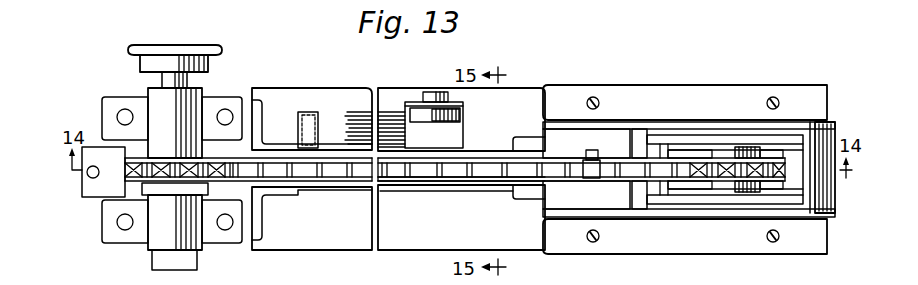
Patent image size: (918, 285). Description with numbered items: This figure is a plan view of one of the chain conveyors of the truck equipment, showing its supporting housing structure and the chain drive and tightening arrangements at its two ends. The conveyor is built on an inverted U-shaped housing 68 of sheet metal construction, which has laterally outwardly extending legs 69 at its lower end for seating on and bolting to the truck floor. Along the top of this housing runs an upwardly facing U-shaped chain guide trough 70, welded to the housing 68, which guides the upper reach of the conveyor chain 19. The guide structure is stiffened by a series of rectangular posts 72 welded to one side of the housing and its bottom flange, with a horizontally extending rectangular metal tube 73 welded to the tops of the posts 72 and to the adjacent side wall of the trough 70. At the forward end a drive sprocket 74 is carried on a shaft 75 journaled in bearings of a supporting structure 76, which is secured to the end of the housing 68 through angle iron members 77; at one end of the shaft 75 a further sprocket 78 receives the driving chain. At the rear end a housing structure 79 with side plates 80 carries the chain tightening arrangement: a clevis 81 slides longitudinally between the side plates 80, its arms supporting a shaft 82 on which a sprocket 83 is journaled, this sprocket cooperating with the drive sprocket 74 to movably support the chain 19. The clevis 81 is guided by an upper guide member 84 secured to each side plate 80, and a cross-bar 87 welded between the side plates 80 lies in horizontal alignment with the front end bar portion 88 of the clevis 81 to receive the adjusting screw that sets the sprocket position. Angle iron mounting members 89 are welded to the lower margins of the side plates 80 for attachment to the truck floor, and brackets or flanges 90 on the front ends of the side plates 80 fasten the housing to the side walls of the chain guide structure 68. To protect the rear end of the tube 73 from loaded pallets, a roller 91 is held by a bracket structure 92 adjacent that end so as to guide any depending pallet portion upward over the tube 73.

The conveyor chain 19 is at (338, 186).
The inverted U-shaped housing 68 is at (453, 190).
The legs 69 is at (295, 95).
The chain guide trough 70 is at (410, 183).
The rectangular posts 72 is at (318, 130).
The rectangular metal tube 73 is at (352, 112).
The sprocket 74 is at (170, 187).
The shaft 75 is at (165, 80).
The supporting structure 76 is at (100, 222).
The angle iron members 77 is at (262, 99).
The sprocket 78 is at (204, 45).
The housing structure 79 is at (680, 223).
The side plates 80 is at (557, 128).
The clevis 81 is at (688, 131).
The shaft 82 is at (748, 132).
The sprocket 83 is at (757, 185).
The upper guide member 84 is at (790, 134).
The cross-bar 87 is at (637, 198).
The front end bar portion 88 is at (660, 150).
The angle iron mounting members 89 is at (570, 94).
The brackets or flanges 90 is at (527, 146).
The roller 91 is at (462, 115).
The bracket structure 92 is at (464, 136).